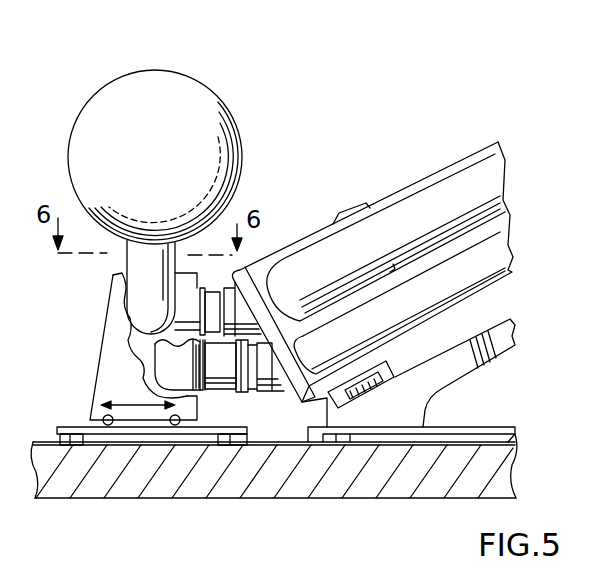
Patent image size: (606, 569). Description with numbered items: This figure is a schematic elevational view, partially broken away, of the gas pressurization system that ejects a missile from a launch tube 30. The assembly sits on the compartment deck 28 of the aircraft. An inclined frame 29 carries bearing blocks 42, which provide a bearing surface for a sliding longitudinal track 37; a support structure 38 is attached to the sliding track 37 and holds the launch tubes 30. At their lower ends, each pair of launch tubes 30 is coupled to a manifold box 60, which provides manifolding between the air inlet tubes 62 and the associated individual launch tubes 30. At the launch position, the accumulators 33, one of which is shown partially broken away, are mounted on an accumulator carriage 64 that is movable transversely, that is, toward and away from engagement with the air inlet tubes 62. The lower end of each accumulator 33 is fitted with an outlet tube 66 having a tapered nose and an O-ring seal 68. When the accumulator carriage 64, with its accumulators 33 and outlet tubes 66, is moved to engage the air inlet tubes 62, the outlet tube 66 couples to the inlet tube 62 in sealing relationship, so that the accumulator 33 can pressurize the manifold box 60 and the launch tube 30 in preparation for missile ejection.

The compartment deck 28 is at (516, 474).
The inclined frame 29 is at (496, 356).
The launch tube 30 is at (443, 265).
The accumulator 33 is at (177, 73).
The sliding longitudinal track 37 is at (372, 392).
The support structure 38 is at (331, 226).
The bearing block 42 is at (400, 372).
The manifold box 60 is at (257, 393).
The air inlet tube 62 is at (230, 272).
The accumulator carriage 64 is at (101, 343).
The outlet tube 66 is at (190, 272).
The O-ring seal 68 is at (237, 393).